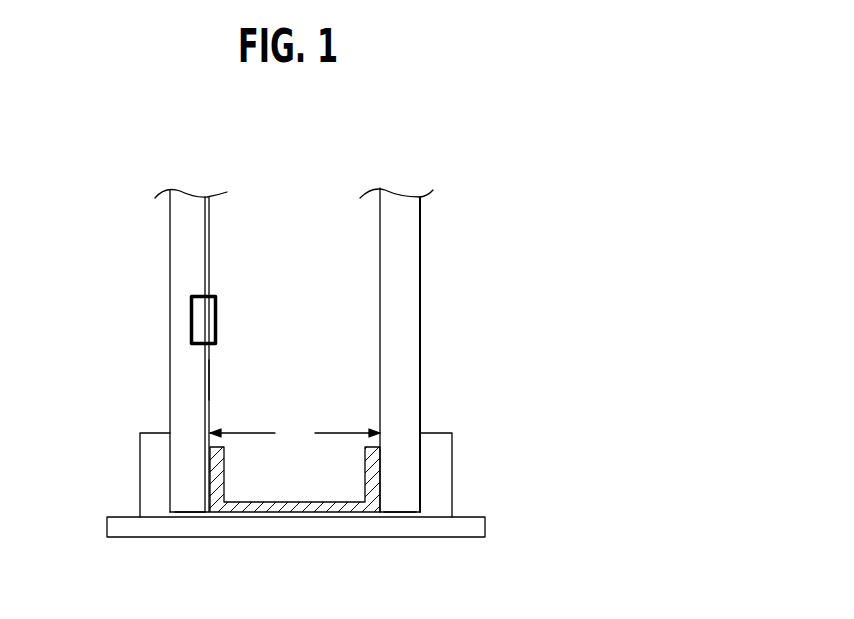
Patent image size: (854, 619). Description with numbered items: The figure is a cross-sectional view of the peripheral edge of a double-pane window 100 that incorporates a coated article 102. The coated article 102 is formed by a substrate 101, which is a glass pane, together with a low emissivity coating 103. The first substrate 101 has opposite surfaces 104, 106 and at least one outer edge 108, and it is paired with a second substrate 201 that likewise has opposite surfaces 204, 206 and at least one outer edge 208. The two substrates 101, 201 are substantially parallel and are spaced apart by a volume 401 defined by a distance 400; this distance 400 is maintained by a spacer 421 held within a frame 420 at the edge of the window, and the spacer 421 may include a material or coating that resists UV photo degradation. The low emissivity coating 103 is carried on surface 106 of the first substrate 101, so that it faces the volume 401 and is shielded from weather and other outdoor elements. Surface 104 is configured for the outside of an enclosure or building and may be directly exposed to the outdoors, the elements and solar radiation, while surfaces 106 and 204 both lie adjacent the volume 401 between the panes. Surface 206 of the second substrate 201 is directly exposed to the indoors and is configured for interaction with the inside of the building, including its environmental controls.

The double-pane window 100 is at (412, 158).
The substrate 101 is at (187, 274).
The coated article 102 is at (156, 228).
The low emissivity coating 103 is at (213, 374).
The surface 104 is at (170, 342).
The surface 106 is at (209, 270).
The outer edge 108 is at (188, 513).
The second substrate 201 is at (387, 282).
The surface 204 is at (380, 343).
The surface 206 is at (422, 293).
The outer edge 208 is at (393, 513).
The distance 400 is at (295, 434).
The volume 401 is at (292, 234).
The frame 420 is at (150, 471).
The spacer 421 is at (347, 507).